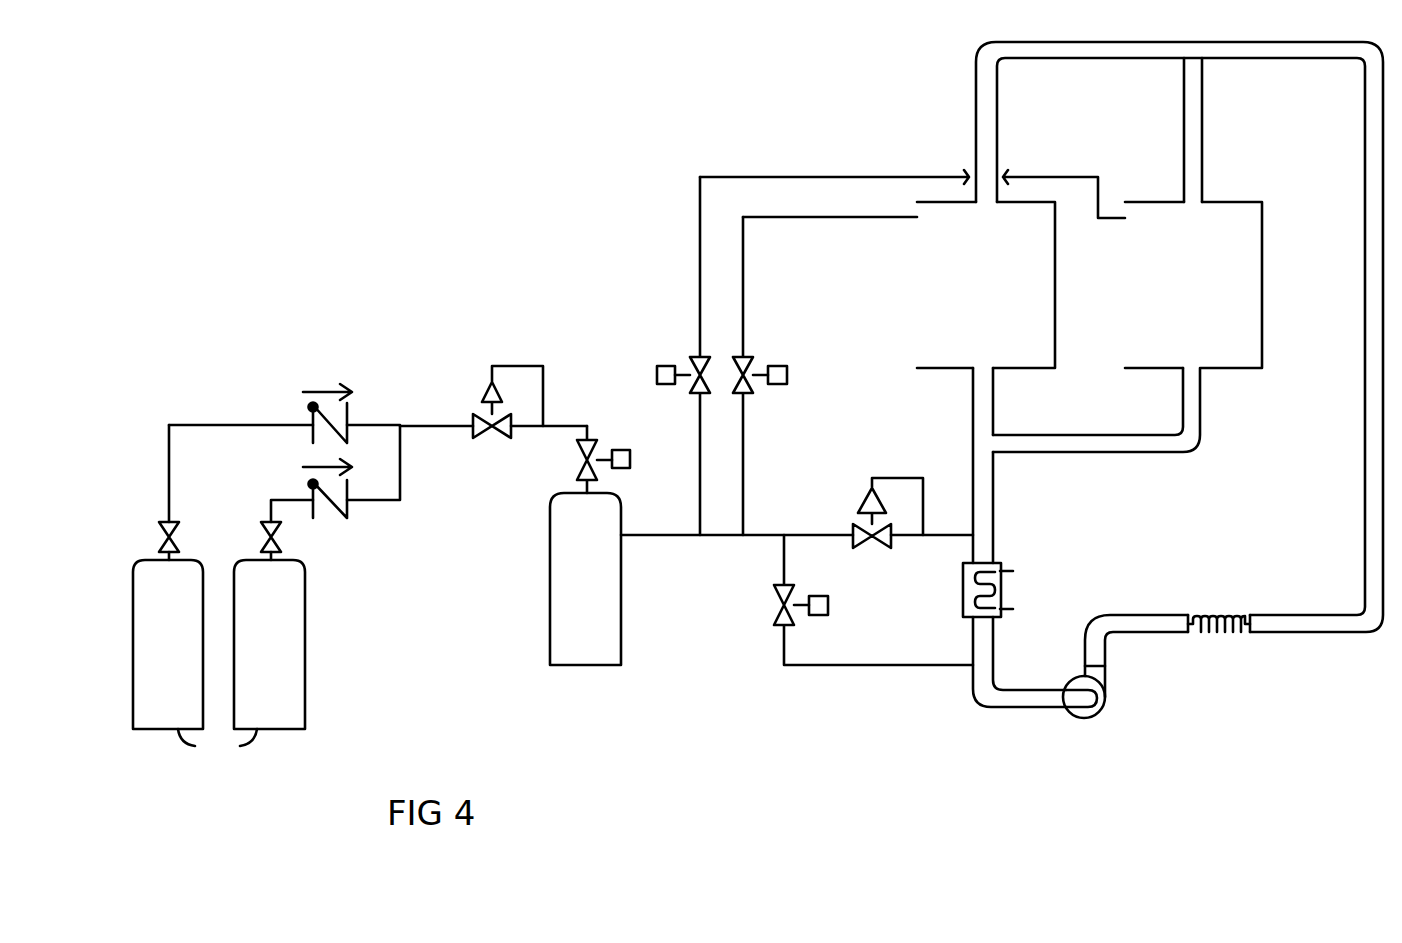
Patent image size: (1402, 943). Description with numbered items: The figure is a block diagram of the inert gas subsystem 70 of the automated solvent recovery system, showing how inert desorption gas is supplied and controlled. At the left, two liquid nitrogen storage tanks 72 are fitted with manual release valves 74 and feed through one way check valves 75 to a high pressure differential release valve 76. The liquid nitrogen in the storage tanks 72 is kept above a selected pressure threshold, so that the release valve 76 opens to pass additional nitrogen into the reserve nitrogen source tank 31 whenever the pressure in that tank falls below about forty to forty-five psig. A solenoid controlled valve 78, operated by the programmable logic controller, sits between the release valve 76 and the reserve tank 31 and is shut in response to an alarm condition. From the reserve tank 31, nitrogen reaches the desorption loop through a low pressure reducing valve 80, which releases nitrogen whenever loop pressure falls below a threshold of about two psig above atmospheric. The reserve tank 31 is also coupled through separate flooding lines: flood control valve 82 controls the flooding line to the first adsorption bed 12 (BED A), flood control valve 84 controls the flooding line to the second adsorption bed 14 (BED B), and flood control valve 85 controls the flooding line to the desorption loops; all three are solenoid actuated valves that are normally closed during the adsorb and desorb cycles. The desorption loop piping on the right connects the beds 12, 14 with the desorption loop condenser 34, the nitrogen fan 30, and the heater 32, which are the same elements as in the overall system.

The inert gas subsystem 70 is at (620, 142).
The liquid nitrogen storage tanks 72 is at (133, 624).
The manual release valves 74 is at (260, 538).
The one way check valves 75 is at (310, 437).
The high pressure differential release valve 76 is at (455, 395).
The solenoid controlled valve 78 is at (612, 447).
The reserve nitrogen source tank 31 is at (621, 600).
The flood control valve 84 is at (677, 344).
The flood control valve 82 is at (764, 359).
The low pressure reducing valve 80 is at (841, 505).
The flood control valve 85 is at (798, 592).
The first adsorption bed 12 is at (1055, 308).
The second adsorption bed 14 is at (1262, 307).
The desorption loop condenser 34 is at (1004, 589).
The heater 32 is at (1211, 614).
The nitrogen fan 30 is at (1106, 699).